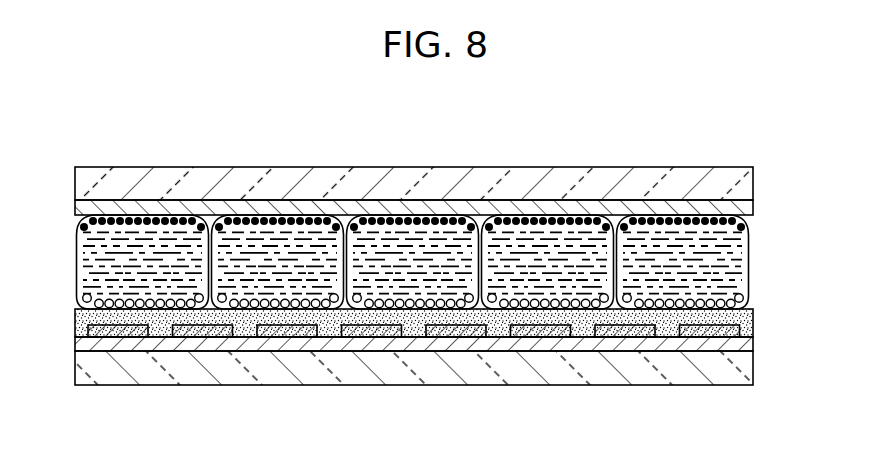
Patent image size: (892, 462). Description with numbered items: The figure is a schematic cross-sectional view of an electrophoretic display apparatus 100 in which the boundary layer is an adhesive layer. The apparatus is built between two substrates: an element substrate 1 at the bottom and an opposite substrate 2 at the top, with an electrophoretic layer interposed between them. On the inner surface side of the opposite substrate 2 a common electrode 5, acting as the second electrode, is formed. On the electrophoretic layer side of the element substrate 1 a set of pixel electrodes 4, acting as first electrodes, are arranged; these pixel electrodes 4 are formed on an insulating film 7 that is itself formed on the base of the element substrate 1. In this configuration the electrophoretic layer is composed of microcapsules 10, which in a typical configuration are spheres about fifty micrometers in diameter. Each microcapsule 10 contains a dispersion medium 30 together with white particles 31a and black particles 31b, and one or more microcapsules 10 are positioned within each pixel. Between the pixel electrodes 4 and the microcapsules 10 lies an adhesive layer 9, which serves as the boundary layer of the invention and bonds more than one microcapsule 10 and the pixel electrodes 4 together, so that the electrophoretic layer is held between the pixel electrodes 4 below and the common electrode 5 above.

The electrophoretic display apparatus 100 is at (505, 135).
The opposite substrate 2 is at (753, 187).
The common electrode 5 is at (753, 208).
The microcapsule 10 is at (442, 266).
The dispersion medium 30 is at (740, 262).
The black particles 31b is at (748, 228).
The white particles 31a is at (748, 297).
The adhesive layer 9 is at (753, 328).
The pixel electrode 4 is at (88, 325).
The insulating film 7 is at (750, 348).
The element substrate 1 is at (750, 368).